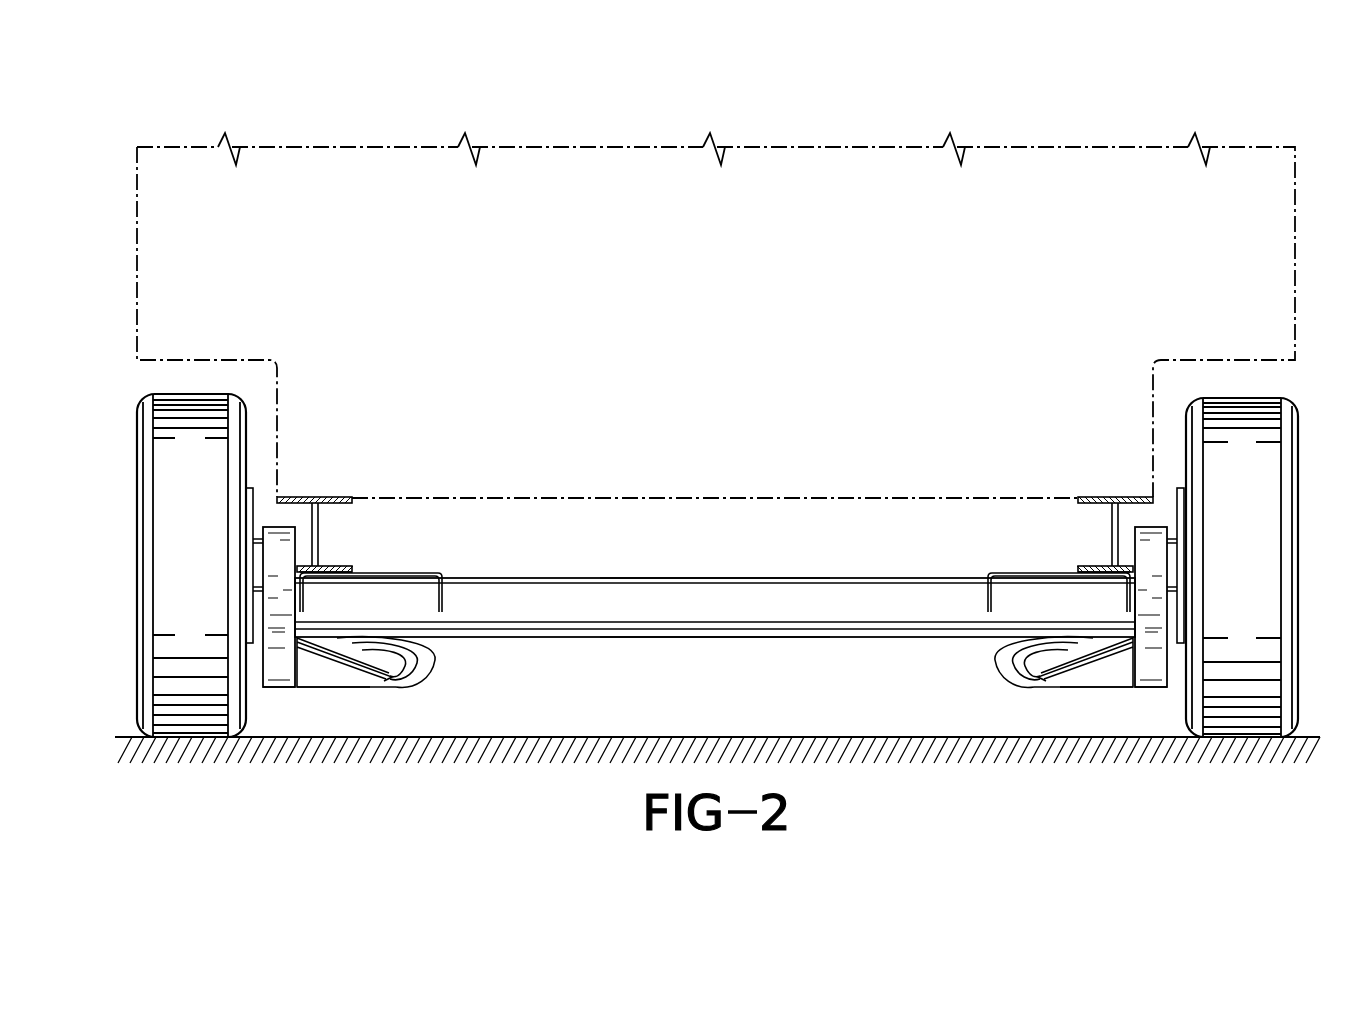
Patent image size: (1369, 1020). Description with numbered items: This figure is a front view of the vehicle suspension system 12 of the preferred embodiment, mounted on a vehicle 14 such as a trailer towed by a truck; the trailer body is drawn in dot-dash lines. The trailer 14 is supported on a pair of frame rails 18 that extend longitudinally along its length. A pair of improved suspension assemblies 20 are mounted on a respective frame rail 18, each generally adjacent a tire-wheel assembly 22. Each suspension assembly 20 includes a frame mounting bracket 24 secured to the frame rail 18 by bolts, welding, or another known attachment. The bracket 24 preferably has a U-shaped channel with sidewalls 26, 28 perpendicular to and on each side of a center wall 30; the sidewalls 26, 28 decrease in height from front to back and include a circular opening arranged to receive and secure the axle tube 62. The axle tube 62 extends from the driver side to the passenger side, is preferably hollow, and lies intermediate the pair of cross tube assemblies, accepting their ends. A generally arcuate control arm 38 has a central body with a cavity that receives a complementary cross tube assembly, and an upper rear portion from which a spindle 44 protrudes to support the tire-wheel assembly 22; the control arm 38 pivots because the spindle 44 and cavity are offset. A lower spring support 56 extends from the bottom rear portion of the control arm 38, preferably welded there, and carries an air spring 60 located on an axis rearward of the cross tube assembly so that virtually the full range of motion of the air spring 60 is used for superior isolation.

The vehicle suspension system 12 is at (702, 678).
The vehicle 14 is at (200, 138).
The frame rail 18 is at (330, 497).
The suspension assembly 20 is at (473, 715).
The tire-wheel assembly 22 is at (168, 505).
The frame mounting bracket 24 is at (417, 525).
The sidewall 26 is at (295, 598).
The sidewall 28 is at (442, 600).
The center wall 30 is at (410, 575).
The control arm 38 is at (272, 775).
The spindle 44 is at (257, 568).
The lower spring support 56 is at (335, 675).
The air spring 60 is at (473, 680).
The axle tube 62 is at (706, 568).